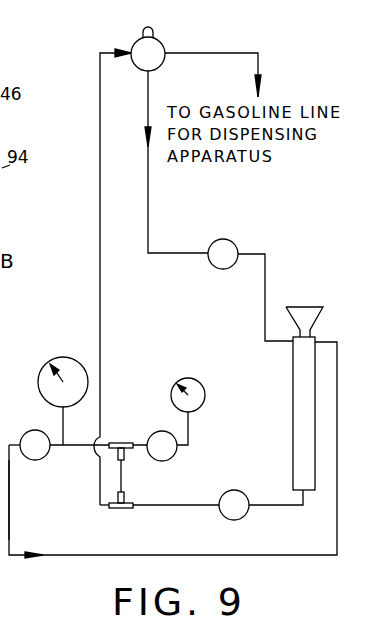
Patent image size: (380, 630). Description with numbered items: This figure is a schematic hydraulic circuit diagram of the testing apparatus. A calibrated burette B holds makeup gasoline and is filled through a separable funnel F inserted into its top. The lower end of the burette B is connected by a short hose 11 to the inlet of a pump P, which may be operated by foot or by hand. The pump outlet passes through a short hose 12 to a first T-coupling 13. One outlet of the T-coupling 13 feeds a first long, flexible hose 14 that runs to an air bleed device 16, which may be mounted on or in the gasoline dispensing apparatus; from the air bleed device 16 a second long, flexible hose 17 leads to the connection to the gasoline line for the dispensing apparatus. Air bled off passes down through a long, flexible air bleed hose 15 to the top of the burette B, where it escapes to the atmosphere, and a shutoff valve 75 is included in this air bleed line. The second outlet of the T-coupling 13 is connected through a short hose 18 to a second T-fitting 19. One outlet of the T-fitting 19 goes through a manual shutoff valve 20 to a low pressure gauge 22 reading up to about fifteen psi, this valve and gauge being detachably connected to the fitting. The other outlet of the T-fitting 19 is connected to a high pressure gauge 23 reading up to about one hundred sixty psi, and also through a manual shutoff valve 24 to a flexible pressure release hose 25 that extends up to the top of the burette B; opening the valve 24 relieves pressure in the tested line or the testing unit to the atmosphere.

The short hose 11 is at (270, 508).
The short hose 12 is at (178, 508).
The first T-coupling 13 is at (114, 508).
The first long, flexible hose 14 is at (106, 52).
The air bleed hose 15 is at (148, 194).
The air bleed device 16 is at (160, 66).
The second long, flexible hose 17 is at (213, 52).
The short hose 18 is at (125, 470).
The second T-fitting 19 is at (120, 442).
The manual shutoff valve 20 is at (155, 434).
The low pressure gauge 22 is at (200, 408).
The high pressure gauge 23 is at (38, 380).
The manual shutoff valve 24 is at (40, 460).
The flexible pressure release hose 25 is at (9, 506).
The shutoff valve 75 is at (234, 242).
The calibrated burette B is at (293, 420).
The separable funnel F is at (320, 318).
The pump P is at (234, 505).